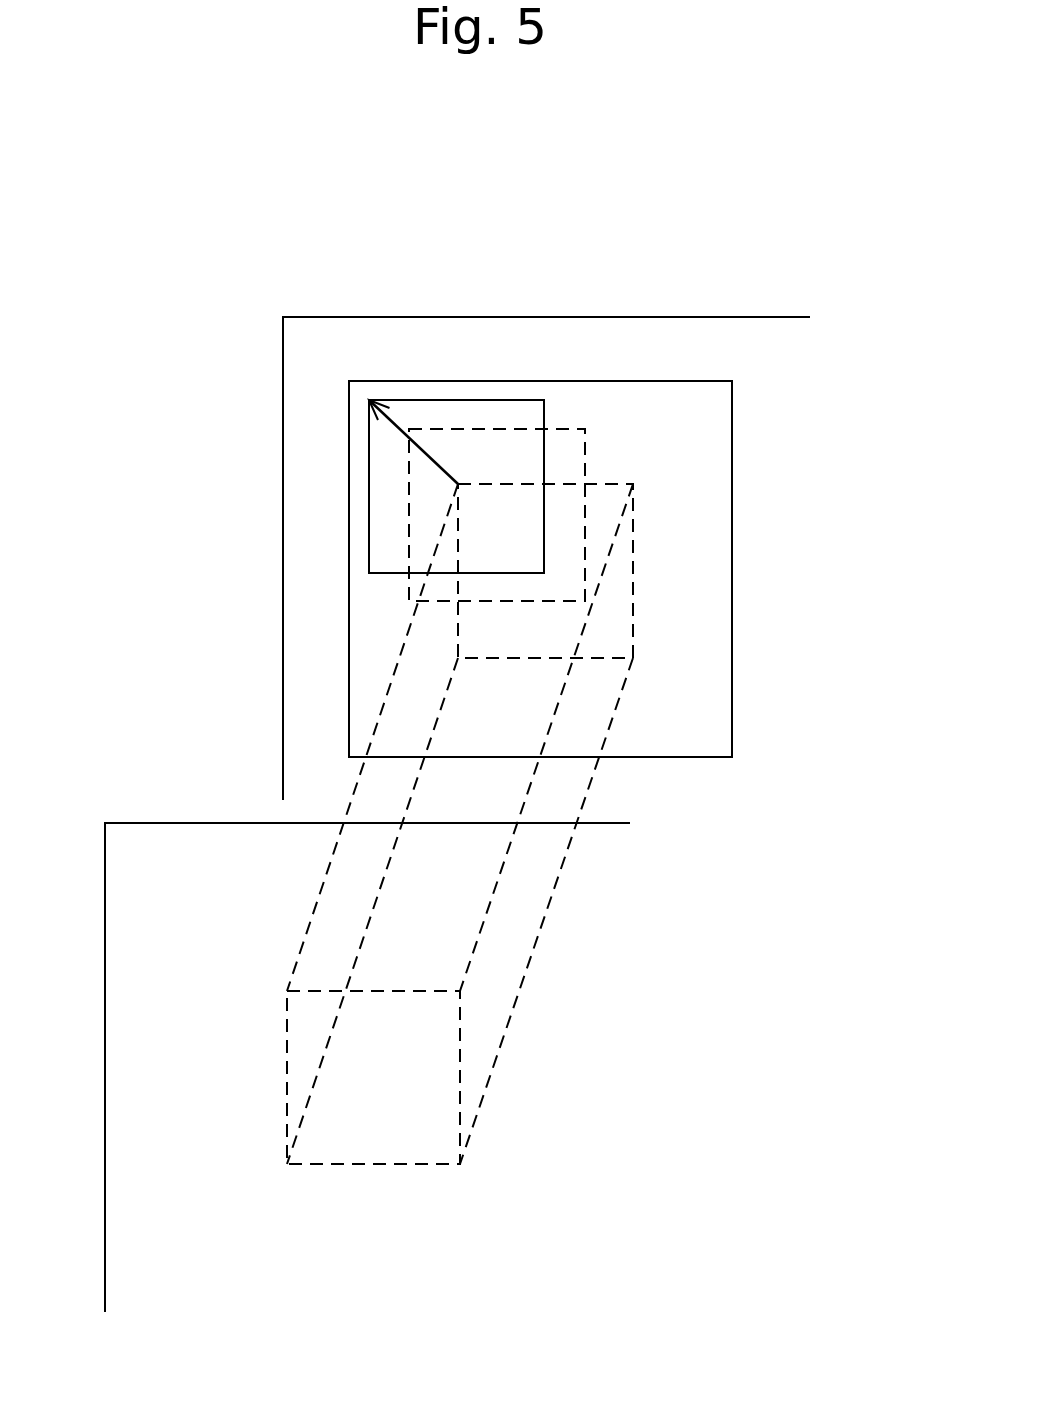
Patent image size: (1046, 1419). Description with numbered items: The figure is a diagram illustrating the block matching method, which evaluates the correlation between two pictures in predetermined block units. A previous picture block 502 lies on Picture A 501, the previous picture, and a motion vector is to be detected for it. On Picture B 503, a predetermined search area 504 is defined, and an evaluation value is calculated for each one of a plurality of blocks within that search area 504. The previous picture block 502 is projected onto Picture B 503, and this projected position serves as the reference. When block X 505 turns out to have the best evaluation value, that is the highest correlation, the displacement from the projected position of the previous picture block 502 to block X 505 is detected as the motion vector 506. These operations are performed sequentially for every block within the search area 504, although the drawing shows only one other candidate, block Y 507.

The Picture A 501 is at (263, 833).
The previous picture block 502 is at (417, 1142).
The Picture B 503 is at (357, 328).
The search area 504 is at (647, 733).
The block X 505 is at (508, 420).
The motion vector 506 is at (425, 452).
The block Y 507 is at (582, 527).